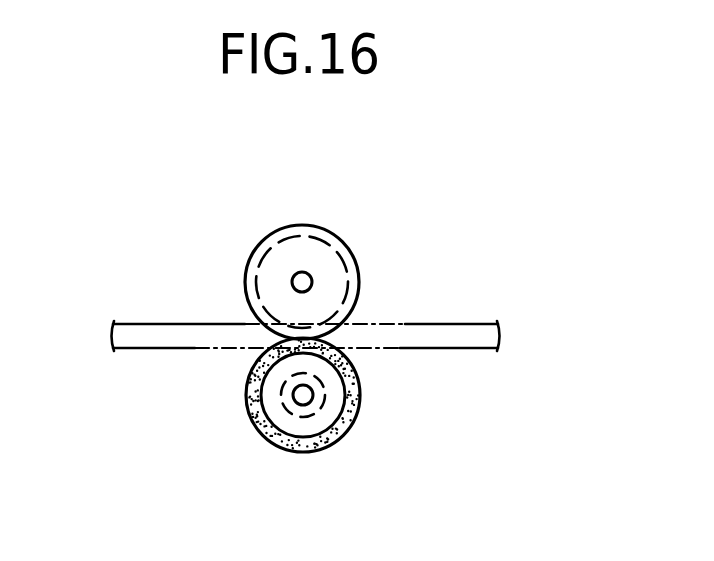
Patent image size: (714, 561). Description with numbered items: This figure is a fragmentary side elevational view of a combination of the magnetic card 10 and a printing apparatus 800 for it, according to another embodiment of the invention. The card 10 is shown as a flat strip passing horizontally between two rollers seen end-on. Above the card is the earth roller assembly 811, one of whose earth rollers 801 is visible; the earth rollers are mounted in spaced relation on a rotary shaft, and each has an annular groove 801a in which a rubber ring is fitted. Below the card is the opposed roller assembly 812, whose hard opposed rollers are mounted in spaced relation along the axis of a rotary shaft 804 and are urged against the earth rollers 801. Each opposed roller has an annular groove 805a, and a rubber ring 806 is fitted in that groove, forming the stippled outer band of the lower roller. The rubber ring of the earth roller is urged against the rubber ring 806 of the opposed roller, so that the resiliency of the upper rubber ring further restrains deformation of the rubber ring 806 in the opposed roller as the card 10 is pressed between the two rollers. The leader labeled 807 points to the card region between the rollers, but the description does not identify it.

The magnetic card 10 is at (463, 322).
The printing apparatus 800 is at (216, 198).
The earth roller 801 is at (368, 212).
The annular groove 801a is at (348, 263).
The rotary shaft 804 is at (314, 396).
The annular groove 805a is at (325, 378).
The rubber ring 806 is at (274, 446).
The recording sheet conveying path 807 is at (241, 346).
The earth roller assembly 811 is at (234, 260).
The opposed roller assembly 812 is at (242, 404).